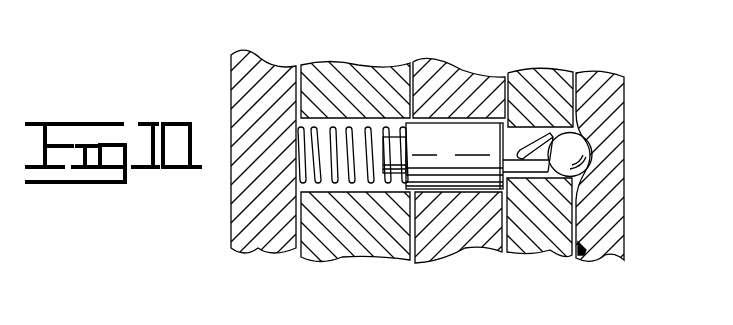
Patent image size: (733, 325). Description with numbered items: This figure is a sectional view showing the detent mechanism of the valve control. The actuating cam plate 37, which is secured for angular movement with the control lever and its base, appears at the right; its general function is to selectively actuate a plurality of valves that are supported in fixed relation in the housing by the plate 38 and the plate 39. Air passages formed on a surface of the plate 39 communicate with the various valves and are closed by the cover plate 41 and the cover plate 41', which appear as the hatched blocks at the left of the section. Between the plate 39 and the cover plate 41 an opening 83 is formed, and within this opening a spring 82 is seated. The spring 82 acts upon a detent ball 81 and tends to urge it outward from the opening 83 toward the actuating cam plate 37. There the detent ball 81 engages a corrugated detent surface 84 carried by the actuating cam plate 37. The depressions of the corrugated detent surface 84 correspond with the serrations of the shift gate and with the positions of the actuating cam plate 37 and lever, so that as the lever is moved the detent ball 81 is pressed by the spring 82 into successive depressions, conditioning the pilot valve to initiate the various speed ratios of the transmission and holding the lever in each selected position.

The actuating cam plate 37 is at (615, 98).
The plate 38 is at (547, 240).
The plate 39 is at (467, 242).
The cover plate 41 is at (355, 185).
The cover plate 41' is at (263, 179).
The detent ball 81 is at (578, 155).
The spring 82 is at (368, 128).
The opening 83 is at (319, 122).
The corrugated detent surface 84 is at (578, 254).